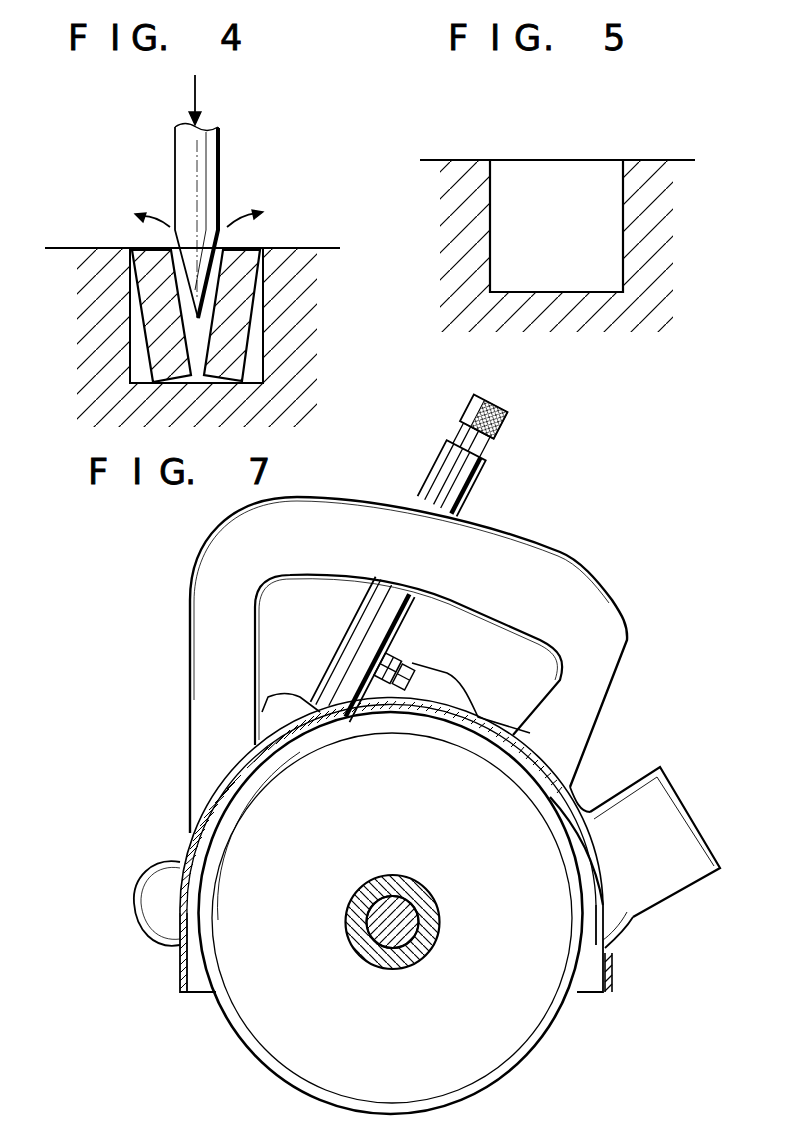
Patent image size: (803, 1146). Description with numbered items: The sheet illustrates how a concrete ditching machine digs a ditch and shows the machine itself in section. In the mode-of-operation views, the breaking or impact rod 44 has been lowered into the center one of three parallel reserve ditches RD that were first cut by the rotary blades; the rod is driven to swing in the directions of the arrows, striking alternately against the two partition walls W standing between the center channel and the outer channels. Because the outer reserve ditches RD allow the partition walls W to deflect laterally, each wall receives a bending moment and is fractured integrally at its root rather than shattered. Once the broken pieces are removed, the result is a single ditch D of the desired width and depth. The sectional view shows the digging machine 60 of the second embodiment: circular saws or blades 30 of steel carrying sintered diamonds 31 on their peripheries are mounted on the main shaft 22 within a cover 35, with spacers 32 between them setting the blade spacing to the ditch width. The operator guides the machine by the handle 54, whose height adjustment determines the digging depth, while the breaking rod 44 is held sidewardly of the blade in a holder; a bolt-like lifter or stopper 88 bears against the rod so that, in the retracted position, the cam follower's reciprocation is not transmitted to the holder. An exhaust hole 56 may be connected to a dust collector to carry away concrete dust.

In FIG. 4, the breaking or impact rod 44 is at (218, 186).
In FIG. 7, the breaking or impact rod 44 is at (470, 493).
In FIG. 4, the partition walls W is at (229, 249).
In FIG. 4, the reserve ditches RD is at (258, 300).
In FIG. 5, the ditch D is at (555, 176).
In FIG. 7, the handle 54 is at (592, 582).
In FIG. 7, the digging machine 60 is at (641, 620).
In FIG. 7, the lifter or stopper 88 is at (400, 663).
In FIG. 7, the cover 35 is at (553, 768).
In FIG. 7, the exhaust hole 56 is at (682, 815).
In FIG. 7, the circular saws or rotary blades 30 is at (498, 1072).
In FIG. 7, the diamonds 31 is at (530, 1052).
In FIG. 7, the spacers 32 is at (346, 928).
In FIG. 7, the main shaft 22 is at (372, 932).